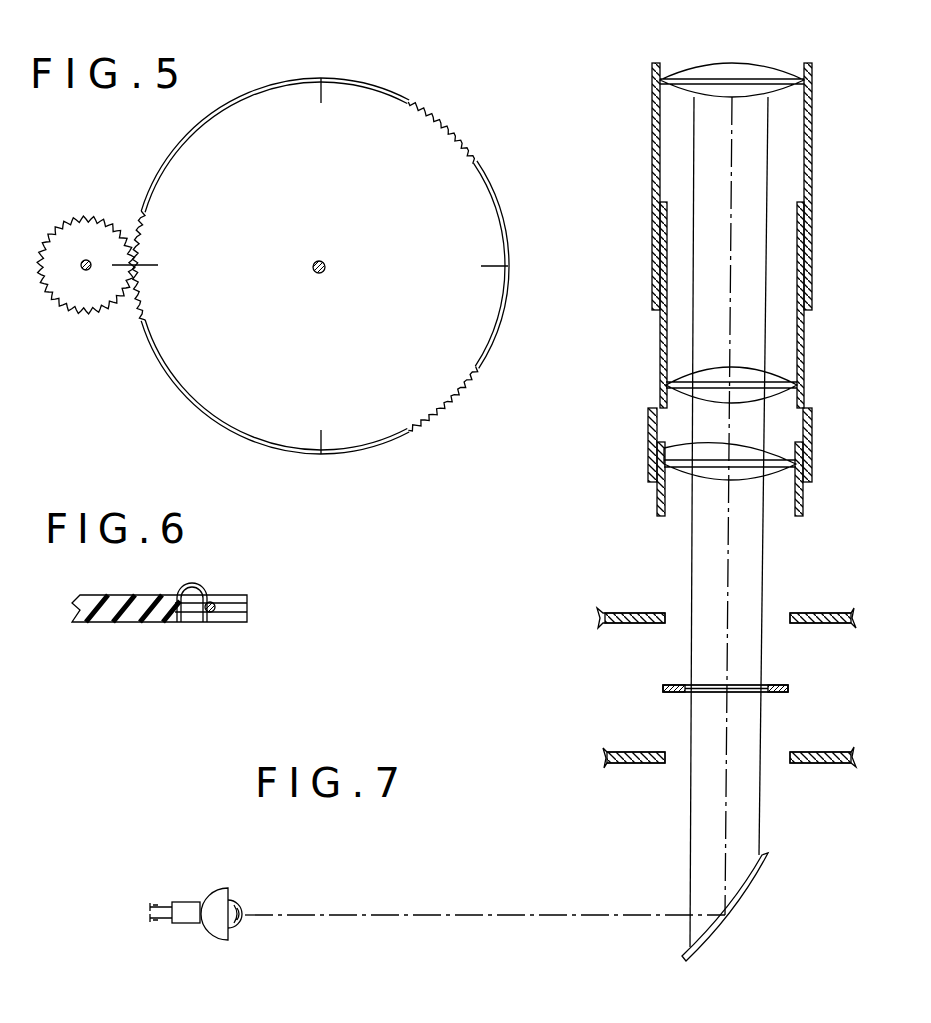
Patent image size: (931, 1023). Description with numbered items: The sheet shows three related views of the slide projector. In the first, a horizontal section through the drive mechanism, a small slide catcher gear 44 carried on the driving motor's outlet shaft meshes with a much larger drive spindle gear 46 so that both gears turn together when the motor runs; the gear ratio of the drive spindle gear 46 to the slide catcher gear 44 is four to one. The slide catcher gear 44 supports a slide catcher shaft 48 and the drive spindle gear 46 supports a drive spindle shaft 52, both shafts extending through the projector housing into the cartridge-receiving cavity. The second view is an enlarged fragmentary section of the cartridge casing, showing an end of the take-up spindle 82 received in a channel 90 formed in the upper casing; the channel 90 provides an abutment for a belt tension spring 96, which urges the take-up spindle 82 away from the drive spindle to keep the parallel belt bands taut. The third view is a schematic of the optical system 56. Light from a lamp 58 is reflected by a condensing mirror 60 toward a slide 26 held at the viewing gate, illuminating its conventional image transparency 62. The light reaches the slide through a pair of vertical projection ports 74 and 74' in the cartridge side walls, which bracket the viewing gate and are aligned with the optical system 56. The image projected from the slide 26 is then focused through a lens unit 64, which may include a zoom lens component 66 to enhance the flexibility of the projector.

In FIG. 5, the slide catcher gear 44 is at (78, 298).
In FIG. 5, the drive spindle gear 46 is at (267, 353).
In FIG. 5, the slide catcher shaft 48 is at (88, 259).
In FIG. 5, the drive spindle shaft 52 is at (326, 263).
In FIG. 6, the take-up spindle 82 is at (216, 605).
In FIG. 6, the channel 90 is at (248, 608).
In FIG. 6, the belt tension spring 96 is at (204, 581).
In FIG. 7, the slide 26 is at (668, 683).
In FIG. 7, the optical system 56 is at (592, 703).
In FIG. 7, the lamp 58 is at (216, 900).
In FIG. 7, the condensing mirror 60 is at (733, 915).
In FIG. 7, the image transparency 62 is at (742, 688).
In FIG. 7, the lens unit 64 is at (770, 380).
In FIG. 7, the zoom lens component 66 is at (760, 75).
In FIG. 7, the projection port 74 is at (729, 778).
In FIG. 7, the projection port 74' is at (726, 601).